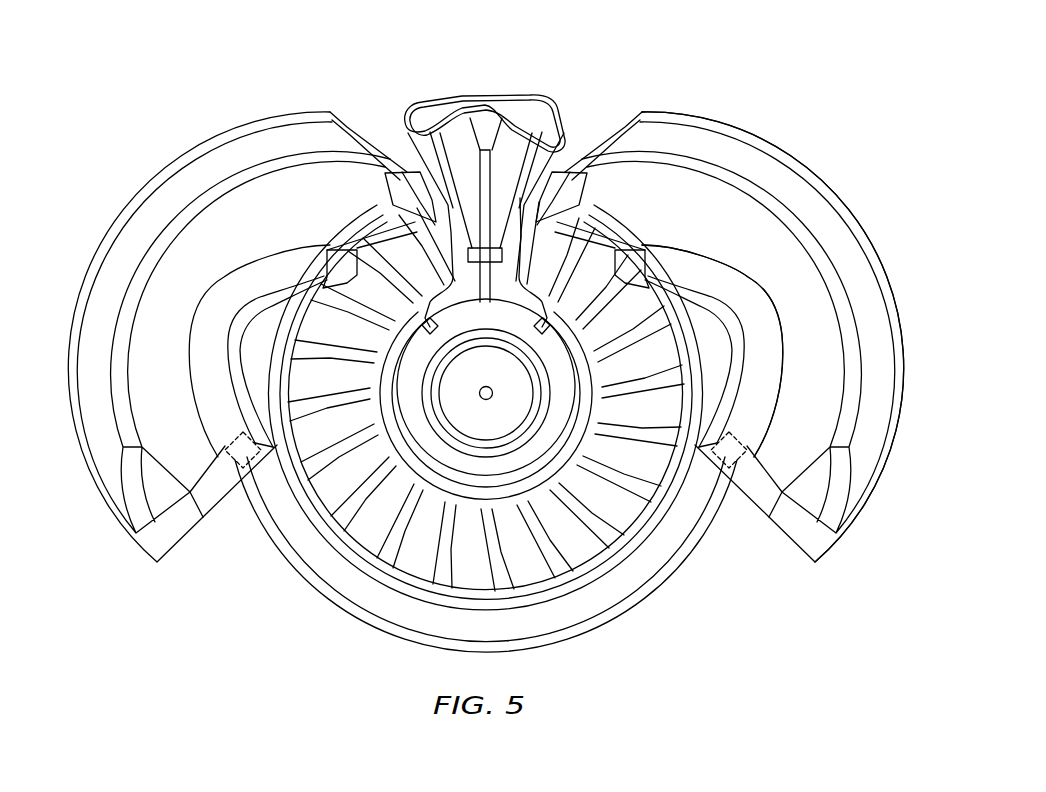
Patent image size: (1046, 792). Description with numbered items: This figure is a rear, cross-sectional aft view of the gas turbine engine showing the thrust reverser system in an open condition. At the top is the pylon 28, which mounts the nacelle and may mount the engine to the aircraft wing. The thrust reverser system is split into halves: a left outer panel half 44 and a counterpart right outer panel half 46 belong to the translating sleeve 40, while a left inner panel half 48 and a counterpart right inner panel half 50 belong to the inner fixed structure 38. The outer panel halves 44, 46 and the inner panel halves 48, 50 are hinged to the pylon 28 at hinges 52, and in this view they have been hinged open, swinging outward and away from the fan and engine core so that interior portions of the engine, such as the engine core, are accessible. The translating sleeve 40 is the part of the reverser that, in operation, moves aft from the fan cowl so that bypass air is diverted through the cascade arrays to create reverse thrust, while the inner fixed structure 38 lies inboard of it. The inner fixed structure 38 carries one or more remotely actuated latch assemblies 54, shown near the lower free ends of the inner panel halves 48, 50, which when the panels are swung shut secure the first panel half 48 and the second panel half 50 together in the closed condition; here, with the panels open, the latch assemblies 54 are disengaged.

The pylon 28 is at (530, 116).
The inner fixed structure 38 is at (756, 276).
The translating sleeve 40 is at (914, 376).
The left outer panel half 44 is at (102, 410).
The right outer panel half 46 is at (873, 330).
The left inner panel half 48 is at (275, 277).
The right inner panel half 50 is at (697, 277).
The hinges 52 is at (397, 178).
The remotely actuated latch assembly 54 is at (250, 455).